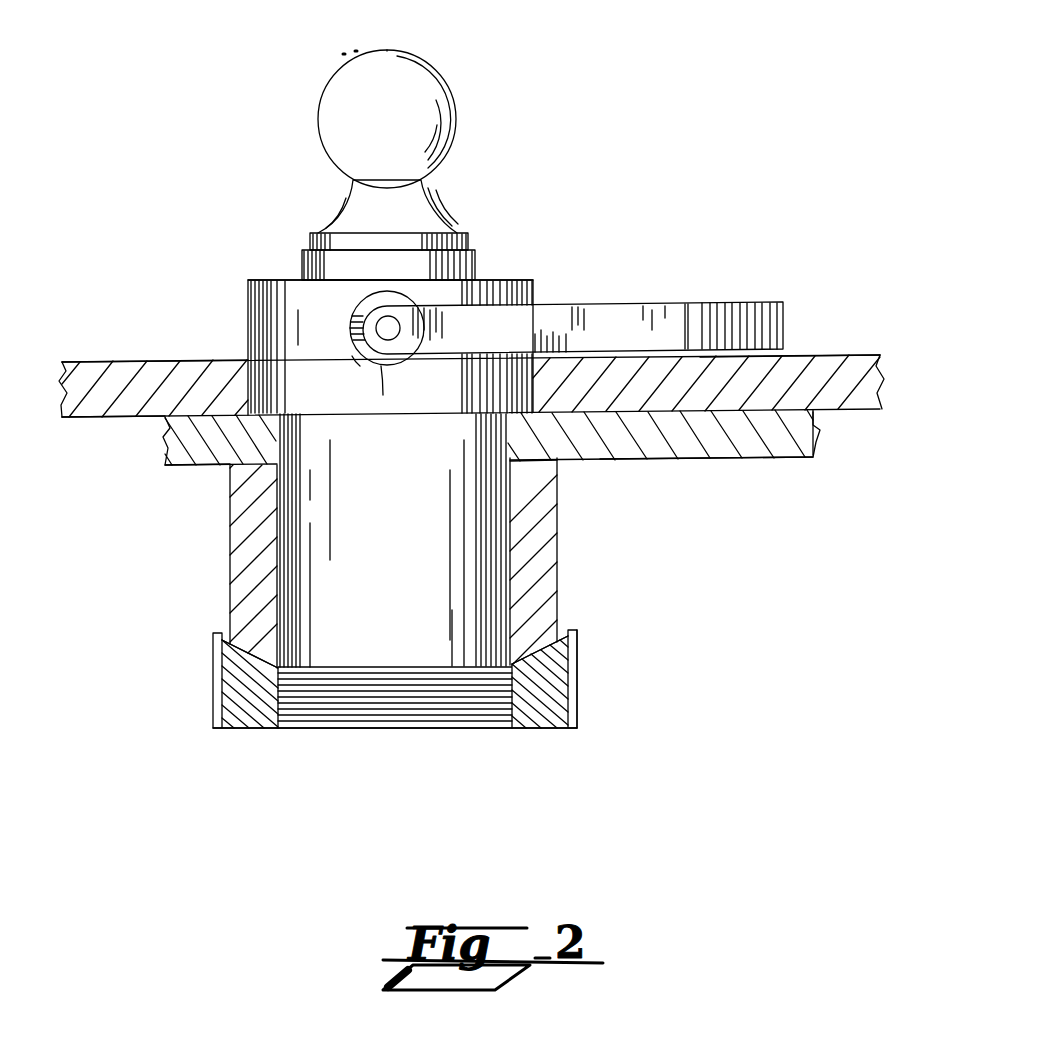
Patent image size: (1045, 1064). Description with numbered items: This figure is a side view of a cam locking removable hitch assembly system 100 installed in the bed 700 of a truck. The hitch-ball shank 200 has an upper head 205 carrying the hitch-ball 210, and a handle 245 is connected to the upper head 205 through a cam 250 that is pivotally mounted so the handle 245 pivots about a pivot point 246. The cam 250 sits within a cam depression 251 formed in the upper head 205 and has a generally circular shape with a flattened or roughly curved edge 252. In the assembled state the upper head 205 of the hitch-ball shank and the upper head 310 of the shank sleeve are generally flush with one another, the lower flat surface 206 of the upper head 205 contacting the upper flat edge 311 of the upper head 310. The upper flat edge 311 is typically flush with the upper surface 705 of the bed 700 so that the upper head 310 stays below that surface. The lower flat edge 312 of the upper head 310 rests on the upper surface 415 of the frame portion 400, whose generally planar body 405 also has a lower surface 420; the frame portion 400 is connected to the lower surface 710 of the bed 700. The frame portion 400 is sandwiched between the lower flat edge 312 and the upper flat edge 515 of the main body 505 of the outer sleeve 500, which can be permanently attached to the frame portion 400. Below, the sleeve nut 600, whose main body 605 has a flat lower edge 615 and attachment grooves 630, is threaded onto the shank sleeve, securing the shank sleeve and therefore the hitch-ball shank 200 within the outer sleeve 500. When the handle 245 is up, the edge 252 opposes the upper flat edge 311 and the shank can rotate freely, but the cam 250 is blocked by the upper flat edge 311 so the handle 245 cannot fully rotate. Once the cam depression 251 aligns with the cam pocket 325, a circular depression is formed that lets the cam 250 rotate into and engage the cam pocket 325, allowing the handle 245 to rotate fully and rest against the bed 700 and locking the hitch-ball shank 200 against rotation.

The cam locking removable hitch assembly system 100 is at (122, 170).
The hitch-ball shank 200 is at (391, 162).
The upper head 205 is at (352, 323).
The lower flat surface 206 is at (268, 383).
The hitch-ball 210 is at (427, 75).
The handle 245 is at (785, 316).
The pivot point 246 is at (386, 326).
The cam 250 is at (393, 302).
The cam depression 251 is at (299, 357).
The flattened or roughly curved edge 252 is at (347, 356).
The upper head 310 is at (475, 373).
The upper flat edge 311 is at (300, 358).
The lower flat edge 312 is at (578, 460).
The cam pocket 325 is at (383, 366).
The frame portion 400 is at (818, 416).
The body 405 is at (818, 430).
The upper surface 415 is at (802, 357).
The lower surface 420 is at (774, 460).
The outer sleeve 500 is at (471, 563).
The main body 505 is at (558, 515).
The upper flat edge 515 is at (190, 462).
The sleeve nut 600 is at (415, 702).
The main body 605 is at (578, 668).
The flat lower edge 615 is at (233, 730).
The attachment grooves 630 is at (220, 680).
The bed 700 is at (133, 300).
The upper surface 705 is at (72, 360).
The lower surface 710 is at (140, 418).